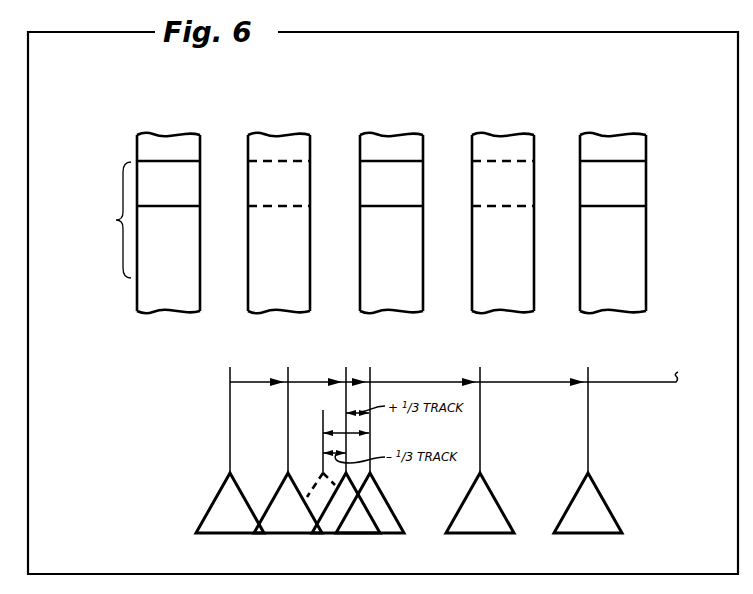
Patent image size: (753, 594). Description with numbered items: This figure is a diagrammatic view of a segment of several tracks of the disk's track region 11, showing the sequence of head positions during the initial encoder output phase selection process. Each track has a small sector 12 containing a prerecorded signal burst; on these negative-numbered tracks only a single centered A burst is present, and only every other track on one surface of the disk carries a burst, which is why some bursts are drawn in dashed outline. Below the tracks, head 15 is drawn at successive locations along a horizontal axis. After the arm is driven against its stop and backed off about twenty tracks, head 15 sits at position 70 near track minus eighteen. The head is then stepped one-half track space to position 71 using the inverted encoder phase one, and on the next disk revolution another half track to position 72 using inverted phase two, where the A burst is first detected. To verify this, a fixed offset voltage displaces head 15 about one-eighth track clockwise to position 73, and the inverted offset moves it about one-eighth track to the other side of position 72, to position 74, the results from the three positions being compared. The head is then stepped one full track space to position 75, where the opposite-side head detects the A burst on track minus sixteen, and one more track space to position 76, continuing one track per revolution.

The track region 11 is at (118, 307).
The sector 12 is at (109, 220).
The head 15 is at (231, 524).
The head position 70 is at (230, 372).
The head position 71 is at (288, 372).
The head position 72 is at (346, 372).
The head position 73 is at (370, 373).
The head position 74 is at (323, 420).
The head position 75 is at (480, 373).
The head position 76 is at (588, 373).